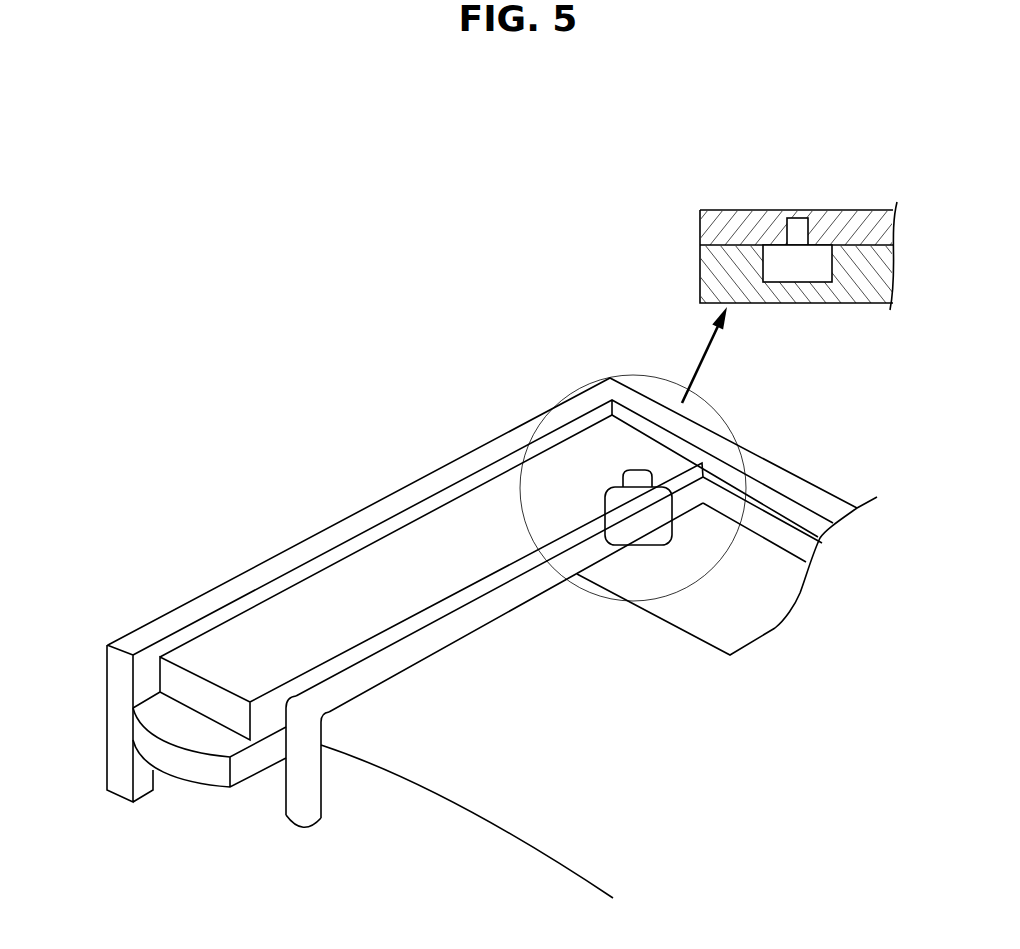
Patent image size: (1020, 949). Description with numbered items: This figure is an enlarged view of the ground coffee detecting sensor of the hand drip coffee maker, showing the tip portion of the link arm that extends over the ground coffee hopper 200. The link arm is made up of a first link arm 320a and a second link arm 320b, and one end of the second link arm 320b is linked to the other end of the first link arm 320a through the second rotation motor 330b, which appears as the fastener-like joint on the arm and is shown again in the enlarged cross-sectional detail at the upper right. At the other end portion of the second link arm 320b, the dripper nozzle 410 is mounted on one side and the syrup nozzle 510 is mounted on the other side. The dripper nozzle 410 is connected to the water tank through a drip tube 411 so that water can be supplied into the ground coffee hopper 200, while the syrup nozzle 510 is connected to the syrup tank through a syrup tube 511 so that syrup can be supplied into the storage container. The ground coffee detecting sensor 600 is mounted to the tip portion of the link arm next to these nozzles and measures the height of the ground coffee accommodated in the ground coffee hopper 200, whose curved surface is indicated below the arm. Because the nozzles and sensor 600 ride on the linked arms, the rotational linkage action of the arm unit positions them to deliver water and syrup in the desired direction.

The ground coffee hopper 200 is at (567, 873).
The first link arm 320a is at (773, 590).
The second link arm 320b is at (360, 577).
The second rotation motor 330b is at (643, 545).
The dripper nozzle 410 is at (123, 790).
The drip tube 411 is at (468, 462).
The syrup nozzle 510 is at (312, 805).
The syrup tube 511 is at (470, 617).
The ground coffee detecting sensor 600 is at (203, 773).